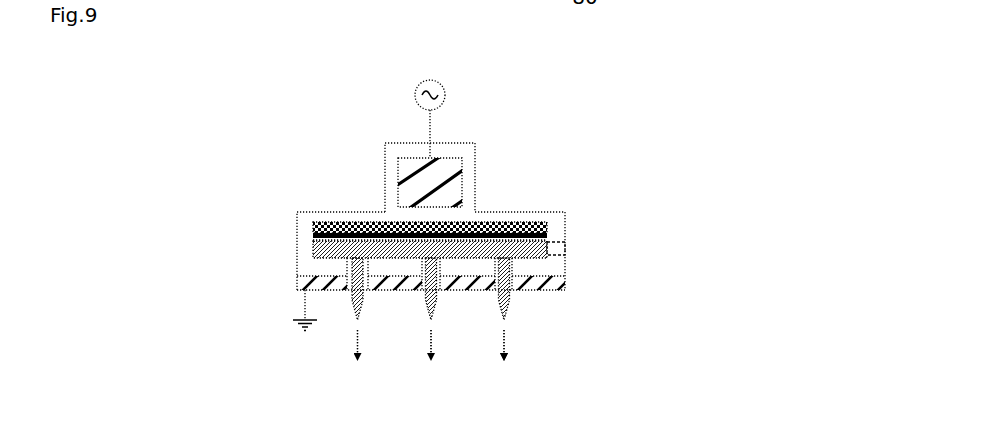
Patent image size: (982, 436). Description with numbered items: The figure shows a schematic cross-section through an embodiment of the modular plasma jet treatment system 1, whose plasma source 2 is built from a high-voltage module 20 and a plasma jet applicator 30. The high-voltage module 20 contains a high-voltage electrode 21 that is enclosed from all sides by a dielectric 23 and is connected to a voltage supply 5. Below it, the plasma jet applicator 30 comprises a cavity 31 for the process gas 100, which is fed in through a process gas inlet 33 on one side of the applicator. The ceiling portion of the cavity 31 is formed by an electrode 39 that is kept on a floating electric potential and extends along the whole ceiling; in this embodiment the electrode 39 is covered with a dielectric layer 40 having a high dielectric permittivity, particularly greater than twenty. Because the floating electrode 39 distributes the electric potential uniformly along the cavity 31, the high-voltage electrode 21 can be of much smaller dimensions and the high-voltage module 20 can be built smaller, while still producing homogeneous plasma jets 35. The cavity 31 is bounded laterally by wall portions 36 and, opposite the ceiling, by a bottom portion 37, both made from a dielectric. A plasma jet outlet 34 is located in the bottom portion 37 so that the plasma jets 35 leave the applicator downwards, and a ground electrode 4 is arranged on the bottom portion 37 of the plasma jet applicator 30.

The system 1 is at (628, 127).
The plasma source 2 is at (640, 118).
The ground electrode 4 is at (325, 282).
The AC voltage source 5 is at (445, 85).
The high-voltage module 20 is at (490, 125).
The high-voltage electrode 21 is at (413, 167).
The dielectric 23 is at (395, 177).
The plasma jet applicator 30 is at (282, 248).
The cavity 31 is at (500, 250).
The process gas inlet 33 is at (558, 248).
The plasma jet outlet 34 is at (508, 267).
The plasma jets 35 is at (508, 295).
The wall portions 36 is at (312, 247).
The bottom portion 37 is at (527, 268).
The electrode 39 is at (355, 223).
The dielectric layer 40 is at (332, 236).
The process gas 100 is at (580, 252).